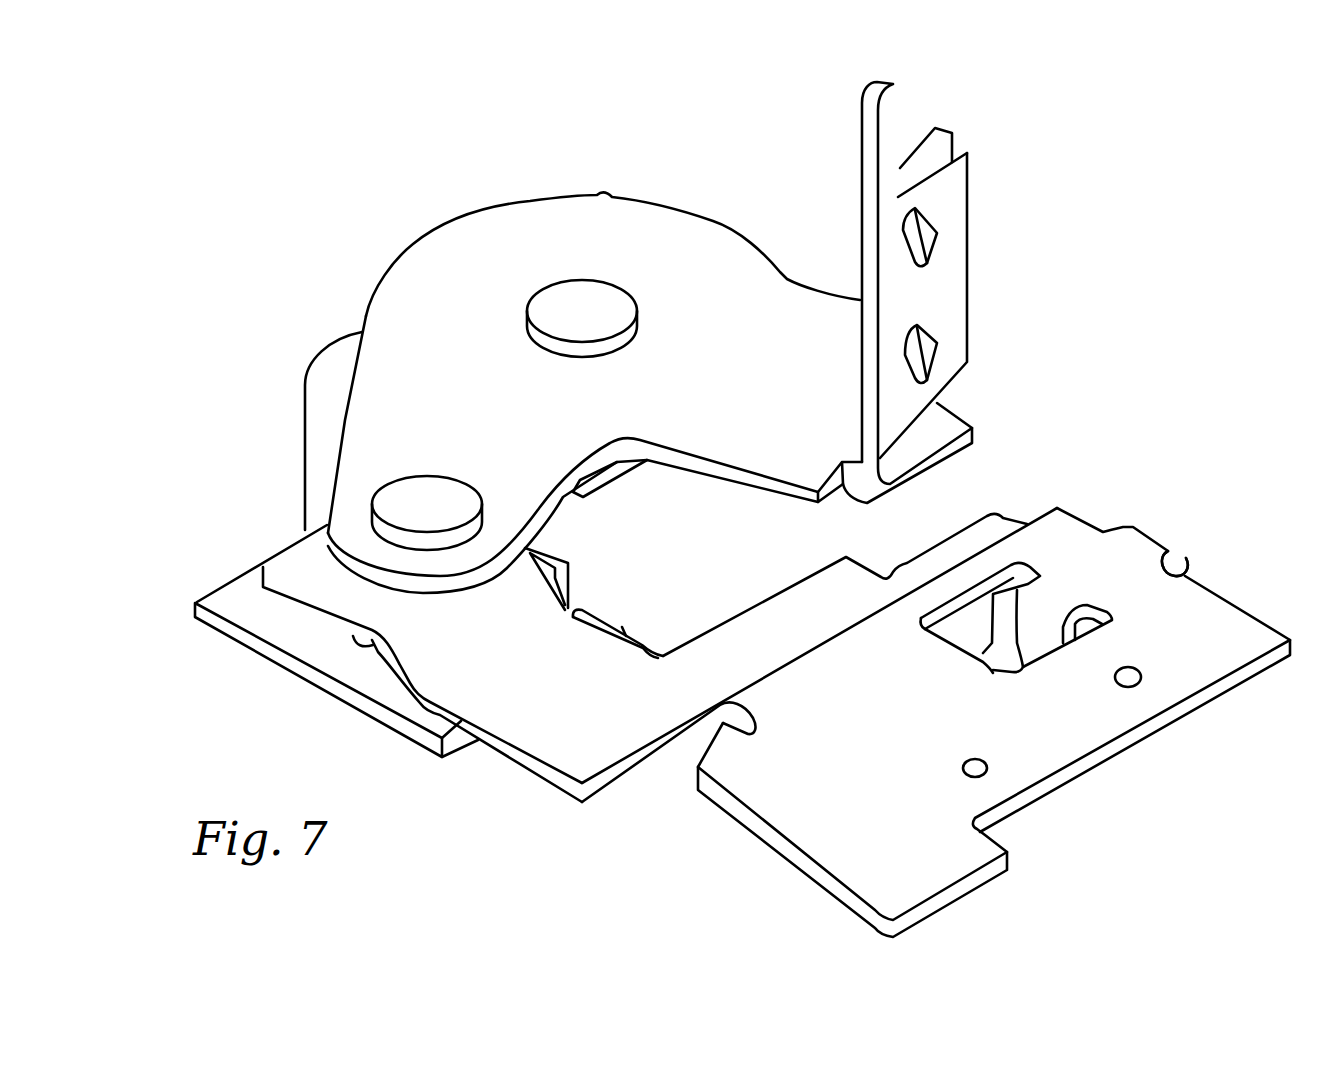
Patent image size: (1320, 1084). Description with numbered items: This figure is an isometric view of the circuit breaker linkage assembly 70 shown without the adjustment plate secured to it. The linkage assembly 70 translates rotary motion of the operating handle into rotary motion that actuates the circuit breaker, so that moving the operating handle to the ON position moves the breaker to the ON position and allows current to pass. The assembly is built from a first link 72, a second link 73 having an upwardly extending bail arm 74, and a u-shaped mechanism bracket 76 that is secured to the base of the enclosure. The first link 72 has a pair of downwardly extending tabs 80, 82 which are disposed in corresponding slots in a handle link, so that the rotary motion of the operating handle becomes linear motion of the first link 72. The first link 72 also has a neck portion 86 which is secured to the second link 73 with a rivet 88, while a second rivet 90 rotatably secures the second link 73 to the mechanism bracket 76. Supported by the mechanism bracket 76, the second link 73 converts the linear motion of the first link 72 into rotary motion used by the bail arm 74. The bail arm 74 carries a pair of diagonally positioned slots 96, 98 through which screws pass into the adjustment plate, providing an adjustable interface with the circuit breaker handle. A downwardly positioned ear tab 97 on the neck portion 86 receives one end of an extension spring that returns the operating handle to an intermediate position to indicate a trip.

The circuit breaker linkage assembly 70 is at (1213, 346).
The first link 72 is at (733, 812).
The second link 73 is at (713, 223).
The bail arm 74 is at (966, 298).
The u-shaped mechanism bracket 76 is at (242, 572).
The downwardly extending tab 80 is at (1190, 557).
The downwardly extending tab 82 is at (1020, 643).
The neck portion 86 is at (515, 740).
The rivet 88 is at (428, 500).
The rivet 90 is at (585, 303).
The diagonally positioned slot 96 is at (930, 215).
The ear tab 97 is at (623, 625).
The diagonally positioned slot 98 is at (940, 347).